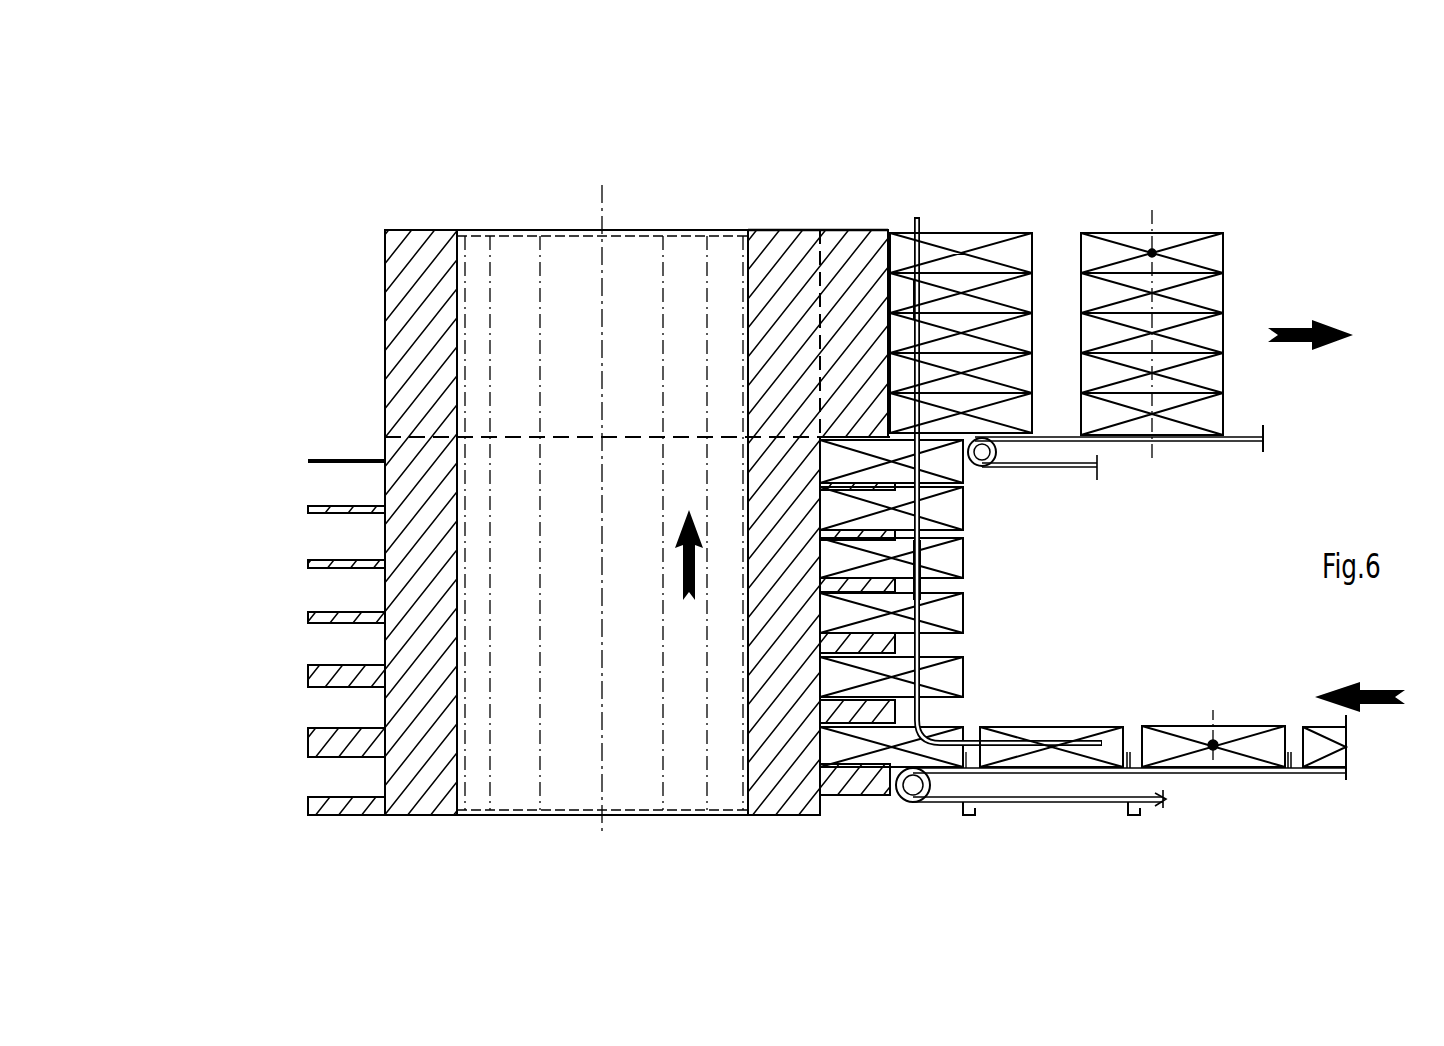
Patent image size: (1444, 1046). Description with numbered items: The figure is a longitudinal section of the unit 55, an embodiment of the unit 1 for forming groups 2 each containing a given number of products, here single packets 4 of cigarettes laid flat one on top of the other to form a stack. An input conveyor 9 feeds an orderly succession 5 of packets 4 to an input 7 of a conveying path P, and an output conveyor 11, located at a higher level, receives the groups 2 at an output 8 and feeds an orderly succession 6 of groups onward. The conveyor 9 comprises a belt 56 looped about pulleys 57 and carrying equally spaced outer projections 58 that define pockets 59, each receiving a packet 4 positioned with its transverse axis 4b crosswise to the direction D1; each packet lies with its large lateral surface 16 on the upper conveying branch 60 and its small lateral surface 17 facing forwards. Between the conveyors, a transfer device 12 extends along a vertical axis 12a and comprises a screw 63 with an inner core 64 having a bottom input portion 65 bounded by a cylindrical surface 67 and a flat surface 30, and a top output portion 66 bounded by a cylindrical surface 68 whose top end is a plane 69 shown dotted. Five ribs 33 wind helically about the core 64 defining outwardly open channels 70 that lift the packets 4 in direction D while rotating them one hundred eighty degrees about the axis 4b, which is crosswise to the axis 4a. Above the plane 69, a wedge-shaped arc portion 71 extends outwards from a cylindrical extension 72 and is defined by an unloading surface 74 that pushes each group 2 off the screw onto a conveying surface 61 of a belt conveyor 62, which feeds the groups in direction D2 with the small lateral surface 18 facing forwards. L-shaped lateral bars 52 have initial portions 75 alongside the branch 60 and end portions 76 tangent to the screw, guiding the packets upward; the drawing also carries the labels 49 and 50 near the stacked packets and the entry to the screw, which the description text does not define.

The cylindrical extension 72 is at (400, 258).
The cylindrical surface 68 is at (368, 483).
The transfer device 12 is at (240, 553).
The channel 70 is at (368, 642).
The rib 33 is at (318, 676).
The cylindrical surface 67 is at (372, 706).
The flat surface 30 is at (425, 818).
The axis 12a is at (606, 228).
The plane 69 is at (522, 435).
The traveling direction D is at (682, 568).
The output portion 66 is at (765, 288).
The screw 63 is at (798, 228).
The arc portion 71 is at (858, 255).
The inner core 64 is at (770, 650).
The input portion 65 is at (758, 750).
The stack of substrates 49 is at (930, 648).
The input 7 is at (955, 710).
The stop 50 is at (966, 722).
The end portion 76 is at (915, 218).
The lateral bar 52 is at (922, 565).
The conveying path P is at (925, 568).
The unloading surface 74 is at (895, 297).
The output 8 is at (985, 215).
The unit 1 is at (1068, 270).
The packet 4 is at (1205, 254).
The group 2 is at (1238, 318).
The orderly succession 6 is at (1165, 220).
The axis 4a is at (1178, 233).
The transverse axis 4b is at (1150, 225).
The unit 55 is at (1283, 172).
The direction D2 is at (1302, 346).
The conveying surface 61 is at (1222, 450).
The output conveyor 11 is at (1112, 455).
The belt conveyor 62 is at (1065, 470).
The upper conveying branch 60 is at (1312, 772).
The belt 56 is at (1098, 803).
The input conveyor 9 is at (978, 822).
The pulley 57 is at (913, 796).
The pocket 59 is at (975, 815).
The outer projection 58 is at (1128, 814).
The initial portion 75 is at (1058, 745).
The small lateral surface 17 is at (1135, 738).
The orderly succession 5 is at (1158, 715).
The large lateral surface 16 is at (1182, 720).
The small lateral surface 18 is at (1288, 735).
The direction D1 is at (1372, 685).